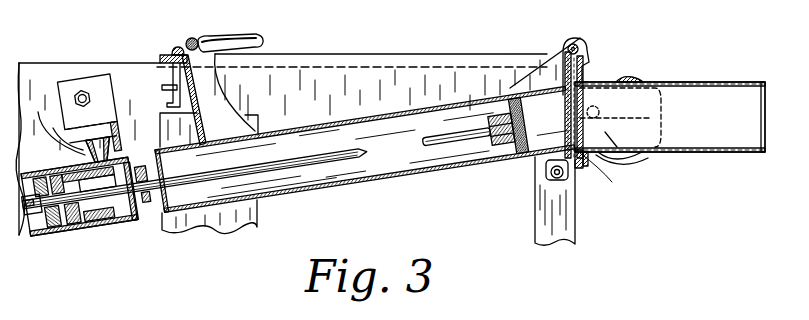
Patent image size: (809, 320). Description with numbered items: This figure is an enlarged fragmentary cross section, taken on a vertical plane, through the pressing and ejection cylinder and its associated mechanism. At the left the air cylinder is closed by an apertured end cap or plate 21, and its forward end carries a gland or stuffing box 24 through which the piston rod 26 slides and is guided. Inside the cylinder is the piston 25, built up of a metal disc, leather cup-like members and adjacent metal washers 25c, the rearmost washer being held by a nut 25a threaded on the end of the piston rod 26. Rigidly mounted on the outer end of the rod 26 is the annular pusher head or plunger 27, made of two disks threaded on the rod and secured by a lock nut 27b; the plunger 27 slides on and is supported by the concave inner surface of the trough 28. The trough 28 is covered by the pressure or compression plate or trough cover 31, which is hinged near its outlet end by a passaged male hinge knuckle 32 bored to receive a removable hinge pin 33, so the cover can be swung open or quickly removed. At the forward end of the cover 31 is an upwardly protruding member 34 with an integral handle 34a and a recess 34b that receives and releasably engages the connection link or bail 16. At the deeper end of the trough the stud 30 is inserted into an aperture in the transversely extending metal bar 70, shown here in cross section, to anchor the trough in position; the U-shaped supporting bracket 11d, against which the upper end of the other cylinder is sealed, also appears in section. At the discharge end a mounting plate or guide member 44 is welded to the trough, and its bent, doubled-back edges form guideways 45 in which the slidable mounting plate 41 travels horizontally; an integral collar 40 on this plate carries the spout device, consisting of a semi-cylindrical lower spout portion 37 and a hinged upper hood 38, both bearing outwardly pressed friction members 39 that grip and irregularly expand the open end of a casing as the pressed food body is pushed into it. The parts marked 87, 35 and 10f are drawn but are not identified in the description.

The housing wall 87 is at (38, 112).
The end cap or plate 21 is at (72, 88).
The stud 30 is at (160, 88).
The transversely extending metal bar 70 is at (160, 70).
The cap 35 is at (177, 49).
The connection link or bail 16 is at (197, 42).
The recess 34b is at (232, 34).
The handle 34a is at (223, 102).
The upwardly protruding member 34 is at (266, 37).
The pressure or compression plate 31 is at (388, 112).
The trough 28 is at (323, 194).
The supporting U-shaped bracket 11d is at (247, 219).
The gland or stuffing box 24 is at (152, 207).
The piston rod 26 is at (447, 140).
The lock nut 27b is at (487, 142).
The pusher head or plunger 27 is at (527, 152).
The piston 25 is at (85, 228).
The metal washers 25c is at (67, 228).
The nut 25a is at (33, 208).
The male hinge knuckle 32 is at (582, 39).
The hinge pin 33 is at (584, 48).
The friction members 39 is at (640, 82).
The hood 38 is at (607, 82).
The lower spout portion 37 is at (610, 153).
The collar 40 is at (627, 152).
The slidable mounting plate 41 is at (584, 158).
The guideways 45 is at (581, 164).
The mounting plate or guide member 44 is at (574, 170).
The post 10f is at (543, 218).